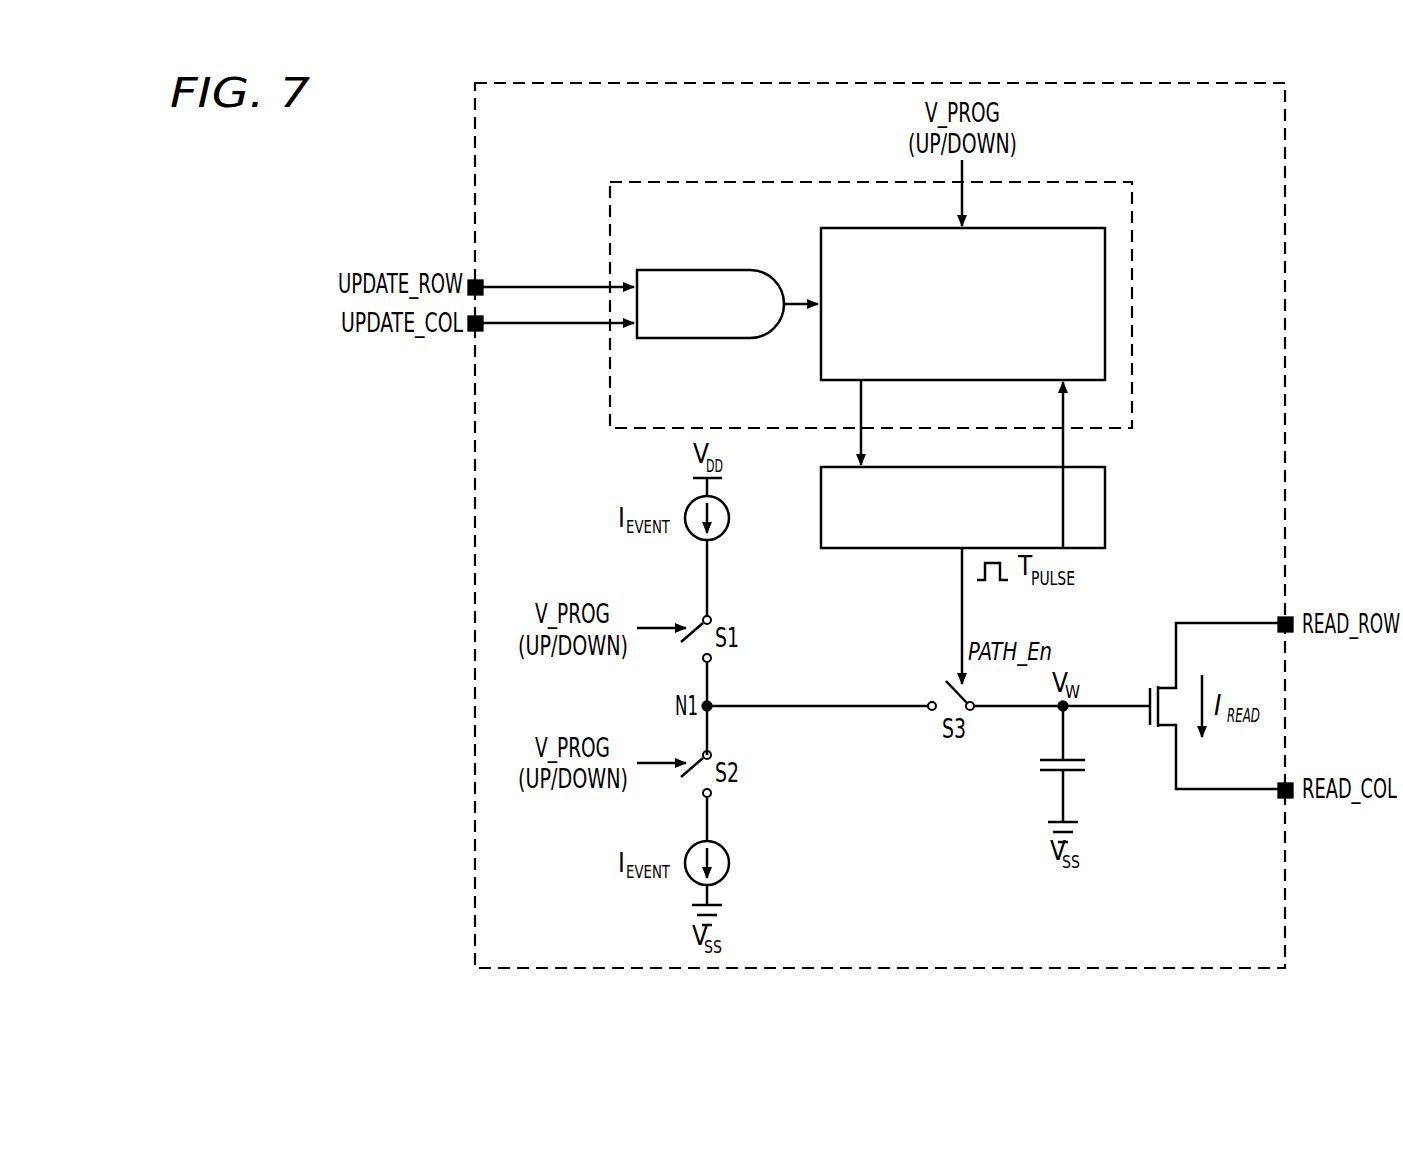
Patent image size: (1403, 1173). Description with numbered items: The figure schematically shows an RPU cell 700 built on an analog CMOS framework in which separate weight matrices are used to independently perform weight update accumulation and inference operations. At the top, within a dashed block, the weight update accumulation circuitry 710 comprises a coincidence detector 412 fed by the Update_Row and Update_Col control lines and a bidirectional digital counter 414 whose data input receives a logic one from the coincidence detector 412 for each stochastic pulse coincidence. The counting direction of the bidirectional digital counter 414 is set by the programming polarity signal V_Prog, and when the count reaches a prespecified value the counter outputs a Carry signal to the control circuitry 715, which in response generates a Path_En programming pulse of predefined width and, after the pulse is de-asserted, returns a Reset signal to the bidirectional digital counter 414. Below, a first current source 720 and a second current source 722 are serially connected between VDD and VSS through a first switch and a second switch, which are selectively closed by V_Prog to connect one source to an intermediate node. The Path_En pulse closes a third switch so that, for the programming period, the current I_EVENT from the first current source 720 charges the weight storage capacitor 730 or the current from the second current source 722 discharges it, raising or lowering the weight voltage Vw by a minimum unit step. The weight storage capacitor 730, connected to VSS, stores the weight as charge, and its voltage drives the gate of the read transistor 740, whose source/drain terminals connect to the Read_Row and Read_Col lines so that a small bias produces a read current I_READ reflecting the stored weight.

The RPU cell 700 is at (475, 96).
The weight update accumulation circuitry 710 is at (700, 182).
The coincidence detector 412 is at (683, 270).
The bidirectional digital counter 414 is at (1010, 228).
The control circuitry 715 is at (1106, 512).
The first current source 720 is at (730, 521).
The second current source 722 is at (730, 866).
The weight storage capacitor 730 is at (1040, 765).
The read transistor 740 is at (1148, 715).